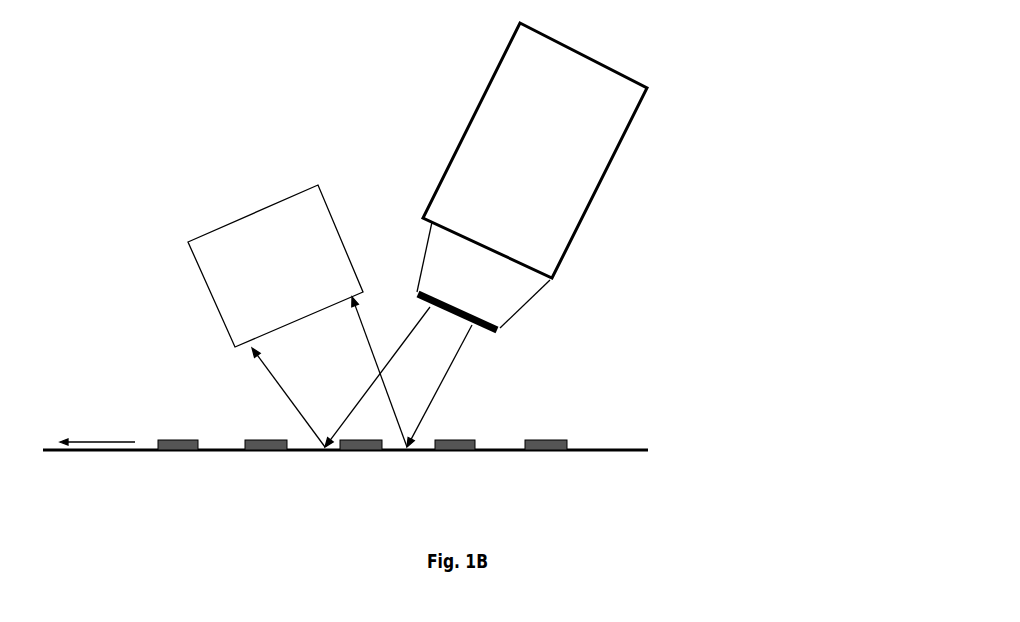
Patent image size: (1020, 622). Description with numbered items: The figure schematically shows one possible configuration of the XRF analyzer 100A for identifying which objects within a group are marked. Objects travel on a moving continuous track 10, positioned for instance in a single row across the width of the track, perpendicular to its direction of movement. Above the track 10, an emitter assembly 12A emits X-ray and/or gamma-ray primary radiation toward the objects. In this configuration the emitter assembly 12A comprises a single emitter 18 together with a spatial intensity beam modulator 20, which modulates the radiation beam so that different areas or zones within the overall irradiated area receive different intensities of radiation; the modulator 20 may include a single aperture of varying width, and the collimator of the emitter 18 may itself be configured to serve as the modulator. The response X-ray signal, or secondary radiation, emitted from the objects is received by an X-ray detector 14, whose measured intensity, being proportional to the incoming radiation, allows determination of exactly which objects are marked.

The XRF analyzer 100A is at (274, 105).
The emitter assembly 12A is at (690, 60).
The emitter 18 is at (585, 215).
The spatial intensity beam modulator 20 is at (484, 346).
The X-ray detector 14 is at (270, 207).
The continuous track 10 is at (262, 457).